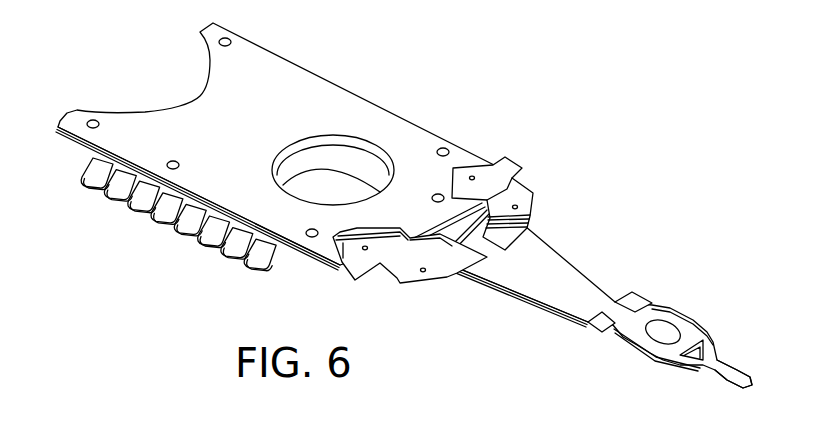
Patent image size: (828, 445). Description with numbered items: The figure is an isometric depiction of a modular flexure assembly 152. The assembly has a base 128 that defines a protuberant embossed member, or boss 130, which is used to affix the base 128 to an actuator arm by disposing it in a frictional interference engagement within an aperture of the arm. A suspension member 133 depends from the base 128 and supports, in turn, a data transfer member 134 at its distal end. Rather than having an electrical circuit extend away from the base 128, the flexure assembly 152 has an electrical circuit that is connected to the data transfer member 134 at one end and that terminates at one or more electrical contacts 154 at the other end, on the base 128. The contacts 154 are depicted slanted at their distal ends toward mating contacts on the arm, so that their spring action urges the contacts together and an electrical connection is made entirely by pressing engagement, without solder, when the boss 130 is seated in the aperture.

The base 128 is at (300, 67).
The protuberant embossed member 130 is at (333, 170).
The suspension member 133 is at (502, 290).
The data transfer member 134 is at (716, 375).
The modular flexure assembly 152 is at (404, 222).
The electrical contacts 154 is at (250, 260).